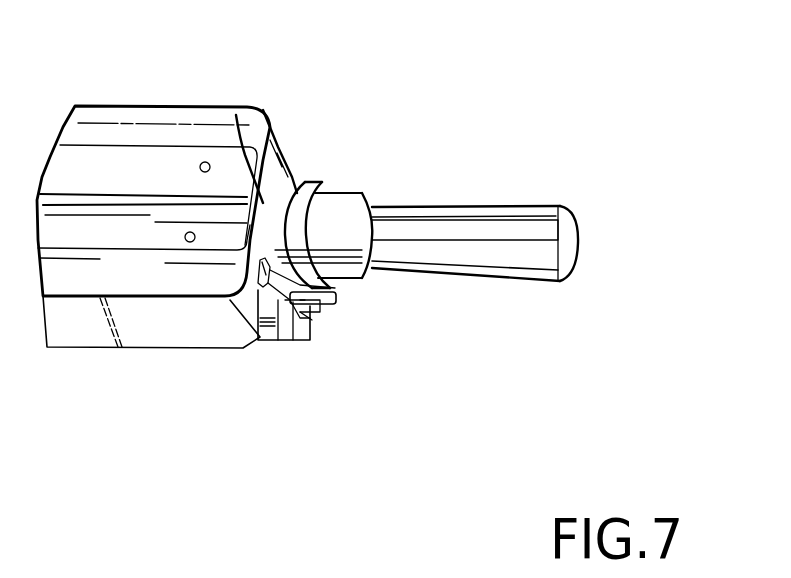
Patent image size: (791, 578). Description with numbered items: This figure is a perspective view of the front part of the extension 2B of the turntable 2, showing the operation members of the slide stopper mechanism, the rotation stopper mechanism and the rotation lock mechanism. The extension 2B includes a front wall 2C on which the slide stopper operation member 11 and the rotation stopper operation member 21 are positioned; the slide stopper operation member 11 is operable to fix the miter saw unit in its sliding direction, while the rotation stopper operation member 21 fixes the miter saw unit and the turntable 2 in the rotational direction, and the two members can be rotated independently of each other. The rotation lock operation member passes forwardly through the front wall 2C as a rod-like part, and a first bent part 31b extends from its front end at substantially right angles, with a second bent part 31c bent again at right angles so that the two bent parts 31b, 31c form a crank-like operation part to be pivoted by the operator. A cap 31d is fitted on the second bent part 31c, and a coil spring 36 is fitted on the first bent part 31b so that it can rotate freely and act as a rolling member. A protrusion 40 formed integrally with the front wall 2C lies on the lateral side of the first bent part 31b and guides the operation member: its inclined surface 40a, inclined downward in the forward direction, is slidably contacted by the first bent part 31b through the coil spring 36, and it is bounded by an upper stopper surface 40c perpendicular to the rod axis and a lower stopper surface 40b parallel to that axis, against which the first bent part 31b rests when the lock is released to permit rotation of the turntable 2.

The turntable 2 is at (153, 188).
The extension 2B is at (160, 107).
The front wall 2C is at (287, 180).
The slide stopper operation member 11 is at (362, 193).
The rotation stopper operation member 21 is at (477, 207).
The first bent part 31b is at (236, 115).
The second bent part 31c is at (273, 333).
The cap 31d is at (308, 312).
The coil spring 36 is at (338, 291).
The protrusion 40 is at (279, 340).
The inclined surface 40a is at (289, 338).
The lower stopper surface 40b is at (306, 318).
The upper stopper surface 40c is at (268, 270).